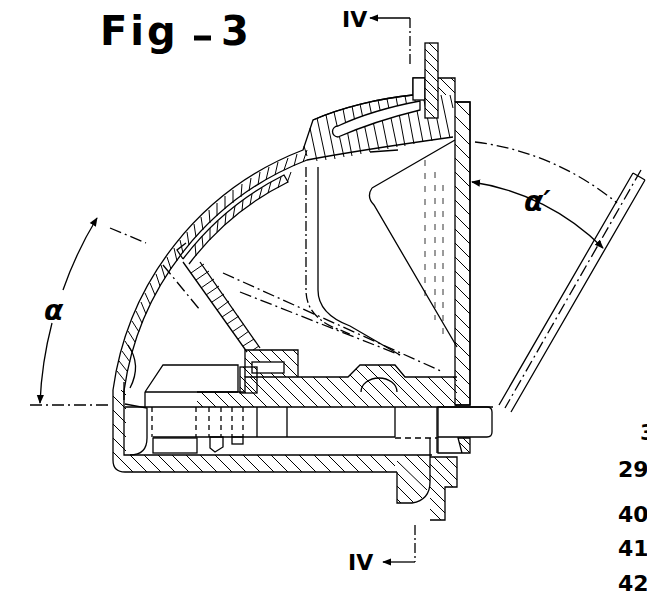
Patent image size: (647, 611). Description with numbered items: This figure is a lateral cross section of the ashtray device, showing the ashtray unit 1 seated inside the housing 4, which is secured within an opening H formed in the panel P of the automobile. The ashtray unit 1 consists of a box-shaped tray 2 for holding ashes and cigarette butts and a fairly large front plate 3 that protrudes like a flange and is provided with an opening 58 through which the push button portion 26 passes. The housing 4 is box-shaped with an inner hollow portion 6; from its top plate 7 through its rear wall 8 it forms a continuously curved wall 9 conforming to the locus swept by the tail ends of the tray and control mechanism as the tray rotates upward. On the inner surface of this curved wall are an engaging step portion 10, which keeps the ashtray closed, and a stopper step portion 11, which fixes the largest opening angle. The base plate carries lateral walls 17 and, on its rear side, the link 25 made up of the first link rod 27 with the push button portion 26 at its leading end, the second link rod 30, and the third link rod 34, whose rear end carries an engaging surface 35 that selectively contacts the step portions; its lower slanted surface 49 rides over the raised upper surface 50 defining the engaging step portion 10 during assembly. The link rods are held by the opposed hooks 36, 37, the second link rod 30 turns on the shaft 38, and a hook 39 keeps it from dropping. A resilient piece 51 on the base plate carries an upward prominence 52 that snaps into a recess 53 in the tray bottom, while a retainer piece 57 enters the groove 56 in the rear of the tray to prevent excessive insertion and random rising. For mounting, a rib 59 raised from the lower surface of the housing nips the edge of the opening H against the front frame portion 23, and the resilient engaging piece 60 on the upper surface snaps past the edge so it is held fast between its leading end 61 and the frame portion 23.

The ashtray unit 1 is at (474, 266).
The tray 2 is at (246, 222).
The front plate 3 is at (471, 130).
The housing 4 is at (226, 189).
The inner hollow portion 6 is at (172, 297).
The top plate 7 is at (266, 165).
The rear wall 8 is at (140, 307).
The curved wall 9 is at (266, 165).
The engaging step portion 10 is at (128, 395).
The stopper step portion 11 is at (183, 252).
The lateral walls 17 is at (179, 373).
The frame portion 23 is at (452, 84).
The link 25 is at (310, 440).
The push button portion 26 is at (492, 432).
The first link rod 27 is at (340, 425).
The second link rod 30 is at (275, 430).
The third link rod 34 is at (180, 422).
The engaging surface 35 is at (140, 410).
The hook 36 is at (430, 448).
The hook 37 is at (165, 455).
The shaft 38 is at (238, 445).
The hook 39 is at (217, 452).
The lower slanted surface 49 is at (136, 440).
The raised upper surface 50 is at (135, 370).
The resilient piece 51 is at (343, 376).
The prominence 52 is at (378, 366).
The recess 53 is at (409, 378).
The groove 56 is at (281, 361).
The retainer piece 57 is at (248, 381).
The opening 58 is at (482, 412).
The rib 59 is at (402, 490).
The resilient engaging piece 60 is at (356, 110).
The leading end 61 is at (415, 100).
The opening H is at (398, 151).
The panel P is at (433, 42).